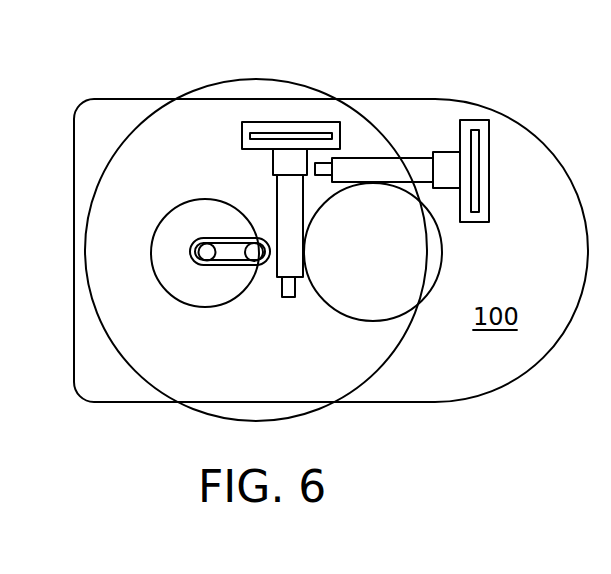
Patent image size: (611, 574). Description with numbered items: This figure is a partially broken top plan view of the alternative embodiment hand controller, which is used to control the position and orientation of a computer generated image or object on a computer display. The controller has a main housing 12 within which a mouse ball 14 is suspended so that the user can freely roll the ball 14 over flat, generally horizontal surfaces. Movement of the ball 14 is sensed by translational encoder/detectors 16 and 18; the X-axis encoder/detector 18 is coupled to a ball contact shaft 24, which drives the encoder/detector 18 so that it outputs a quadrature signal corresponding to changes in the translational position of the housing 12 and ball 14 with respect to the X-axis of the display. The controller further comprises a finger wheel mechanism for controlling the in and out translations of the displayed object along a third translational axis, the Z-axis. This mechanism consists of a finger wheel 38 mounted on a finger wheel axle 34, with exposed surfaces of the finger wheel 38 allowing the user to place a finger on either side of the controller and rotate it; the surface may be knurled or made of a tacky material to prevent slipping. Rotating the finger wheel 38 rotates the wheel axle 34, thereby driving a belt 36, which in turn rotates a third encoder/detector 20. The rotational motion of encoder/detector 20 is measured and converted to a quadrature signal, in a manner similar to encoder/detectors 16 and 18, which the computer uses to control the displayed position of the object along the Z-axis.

The main housing 12 is at (458, 394).
The mouse ball 14 is at (436, 261).
The encoder/detector 16 is at (275, 128).
The X-axis encoder/detector 18 is at (483, 160).
The third encoder/detector 20 is at (167, 267).
The ball contact shaft 24 is at (413, 166).
The finger wheel axle 34 is at (255, 255).
The belt 36 is at (227, 267).
The finger wheel 38 is at (277, 407).